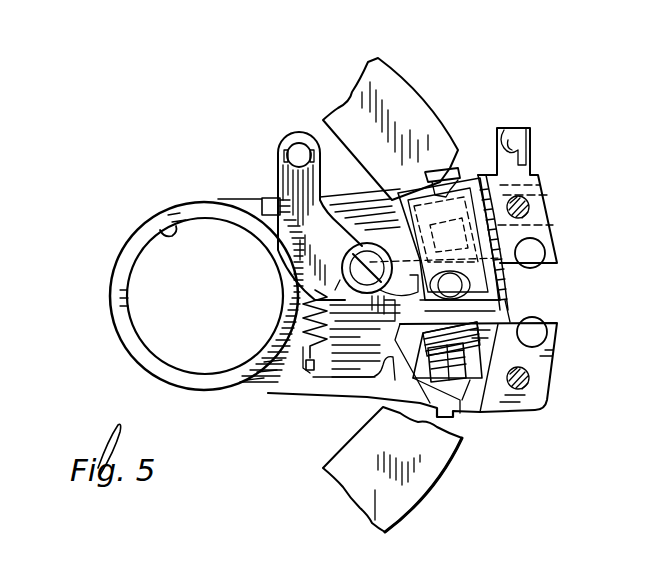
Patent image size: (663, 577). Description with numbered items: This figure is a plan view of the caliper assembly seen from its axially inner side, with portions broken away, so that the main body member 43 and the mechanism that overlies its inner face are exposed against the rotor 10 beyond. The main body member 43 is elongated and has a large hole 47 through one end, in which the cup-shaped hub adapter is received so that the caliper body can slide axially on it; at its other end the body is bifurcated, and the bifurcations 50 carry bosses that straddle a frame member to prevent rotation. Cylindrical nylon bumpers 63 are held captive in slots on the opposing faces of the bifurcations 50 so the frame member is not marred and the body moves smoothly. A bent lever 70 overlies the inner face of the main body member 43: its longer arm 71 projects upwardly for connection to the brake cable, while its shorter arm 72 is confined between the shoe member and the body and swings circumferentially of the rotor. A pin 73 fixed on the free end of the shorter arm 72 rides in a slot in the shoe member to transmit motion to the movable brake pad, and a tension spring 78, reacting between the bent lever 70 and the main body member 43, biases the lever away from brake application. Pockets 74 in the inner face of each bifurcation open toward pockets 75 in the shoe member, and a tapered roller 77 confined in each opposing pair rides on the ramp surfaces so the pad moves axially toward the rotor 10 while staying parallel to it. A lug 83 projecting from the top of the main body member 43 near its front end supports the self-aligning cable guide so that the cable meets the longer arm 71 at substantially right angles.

The rotor 10 is at (415, 67).
The main body member 43 is at (305, 392).
The hole 47 is at (162, 232).
The bifurcations 50 is at (503, 246).
The bumpers 63 is at (532, 253).
The bent lever 70 is at (303, 125).
The longer arm 71 is at (291, 194).
The shorter arm 72 is at (392, 322).
The pin 73 is at (460, 241).
The pockets 74 is at (478, 415).
The pockets 75 is at (552, 240).
The tapered roller 77 is at (440, 368).
The tension spring 78 is at (328, 336).
The lug 83 is at (515, 125).